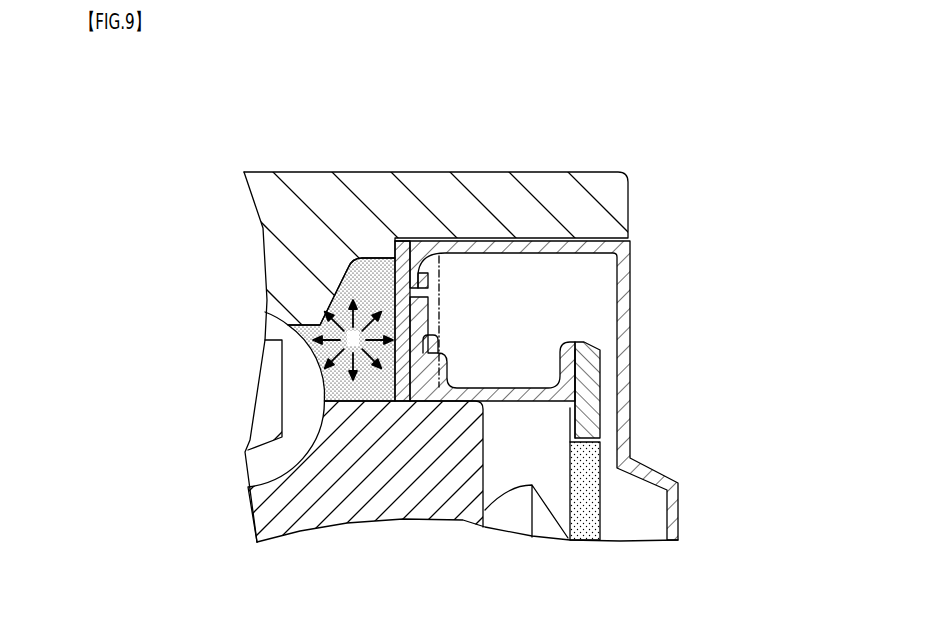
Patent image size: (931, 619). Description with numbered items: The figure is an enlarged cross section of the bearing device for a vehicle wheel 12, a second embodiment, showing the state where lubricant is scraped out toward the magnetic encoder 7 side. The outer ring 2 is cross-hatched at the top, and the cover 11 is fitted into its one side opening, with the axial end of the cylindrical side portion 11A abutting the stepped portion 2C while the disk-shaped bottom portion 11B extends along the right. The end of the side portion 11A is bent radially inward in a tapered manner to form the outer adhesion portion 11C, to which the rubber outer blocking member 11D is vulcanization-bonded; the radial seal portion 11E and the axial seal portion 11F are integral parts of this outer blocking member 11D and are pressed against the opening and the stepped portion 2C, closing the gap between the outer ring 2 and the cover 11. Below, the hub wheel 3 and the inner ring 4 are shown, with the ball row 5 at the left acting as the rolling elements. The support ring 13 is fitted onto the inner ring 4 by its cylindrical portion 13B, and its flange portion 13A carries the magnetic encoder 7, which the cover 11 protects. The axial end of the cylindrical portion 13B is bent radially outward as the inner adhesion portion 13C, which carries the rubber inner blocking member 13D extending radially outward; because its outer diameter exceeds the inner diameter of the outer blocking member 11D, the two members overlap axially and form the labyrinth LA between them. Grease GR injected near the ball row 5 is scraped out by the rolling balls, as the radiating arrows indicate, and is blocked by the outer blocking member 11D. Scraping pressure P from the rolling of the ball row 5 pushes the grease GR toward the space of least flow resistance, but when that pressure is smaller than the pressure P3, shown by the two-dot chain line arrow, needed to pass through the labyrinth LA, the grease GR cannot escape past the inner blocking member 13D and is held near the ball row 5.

The outer ring 2 is at (313, 183).
The stepped portion 2C is at (402, 236).
The hub wheel 3 is at (521, 533).
The inner ring 4 is at (281, 540).
The ball row 5 is at (270, 323).
The magnetic encoder 7 is at (588, 541).
The cover 11 is at (733, 435).
The side portion 11A is at (537, 246).
The bottom portion 11B is at (632, 341).
The outer adhesion portion 11C is at (440, 254).
The outer blocking member 11D is at (430, 291).
The radial seal portion 11E is at (412, 240).
The axial seal portion 11F is at (392, 250).
The bearing device for a vehicle wheel 12 is at (194, 100).
The support ring 13 is at (543, 415).
The flange portion 13A is at (573, 340).
The cylindrical portion 13B is at (512, 402).
The inner adhesion portion 13C is at (455, 386).
The inner blocking member 13D is at (441, 349).
The grease GR is at (345, 272).
The scraping pressure P is at (353, 340).
The pressure necessary to pass through the labyrinth P3 is at (458, 314).
The labyrinth LA is at (441, 342).